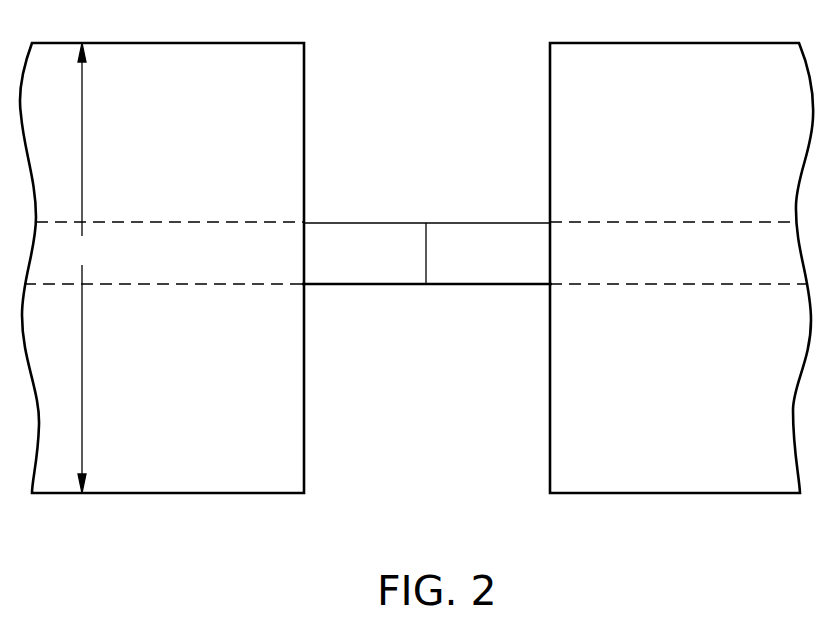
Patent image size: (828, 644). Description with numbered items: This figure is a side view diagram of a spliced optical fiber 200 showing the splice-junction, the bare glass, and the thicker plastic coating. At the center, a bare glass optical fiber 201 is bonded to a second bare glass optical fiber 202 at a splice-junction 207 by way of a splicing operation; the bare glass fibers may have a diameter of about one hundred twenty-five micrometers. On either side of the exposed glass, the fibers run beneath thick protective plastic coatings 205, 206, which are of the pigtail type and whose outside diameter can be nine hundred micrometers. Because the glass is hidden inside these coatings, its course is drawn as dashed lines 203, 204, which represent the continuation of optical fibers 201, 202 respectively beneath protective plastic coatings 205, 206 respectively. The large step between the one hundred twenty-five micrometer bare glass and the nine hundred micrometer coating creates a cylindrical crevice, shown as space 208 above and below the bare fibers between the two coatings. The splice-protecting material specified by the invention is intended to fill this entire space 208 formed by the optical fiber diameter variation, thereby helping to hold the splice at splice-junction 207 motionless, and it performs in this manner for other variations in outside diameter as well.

The semiconductor device 200 is at (451, 33).
The optical fiber 201 is at (343, 273).
The optical fiber 202 is at (463, 273).
The dashed line 203 is at (155, 285).
The dashed line 204 is at (697, 285).
The protective plastic coating 205 is at (226, 494).
The protective plastic coating 206 is at (625, 494).
The splice-junction 207 is at (427, 243).
The space 208 is at (373, 118).